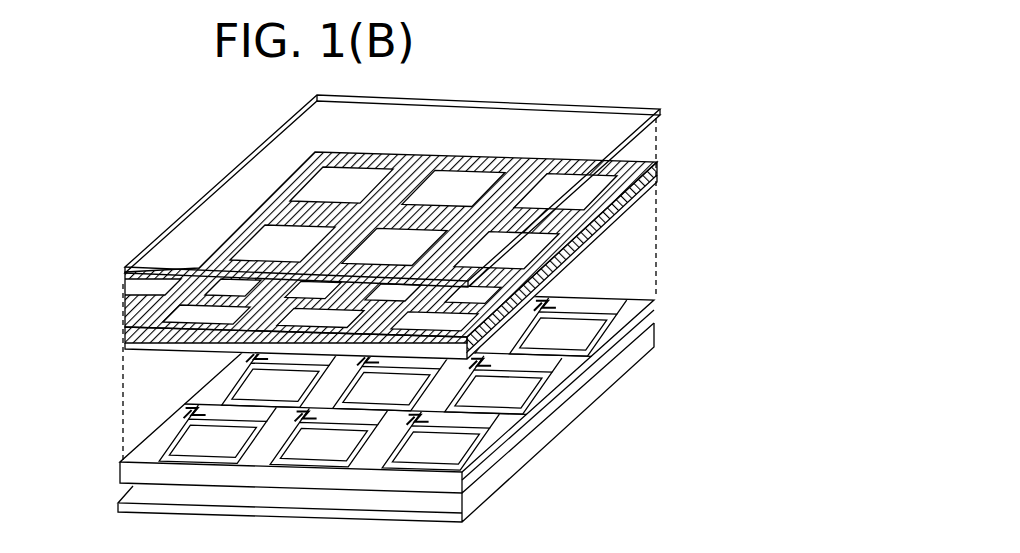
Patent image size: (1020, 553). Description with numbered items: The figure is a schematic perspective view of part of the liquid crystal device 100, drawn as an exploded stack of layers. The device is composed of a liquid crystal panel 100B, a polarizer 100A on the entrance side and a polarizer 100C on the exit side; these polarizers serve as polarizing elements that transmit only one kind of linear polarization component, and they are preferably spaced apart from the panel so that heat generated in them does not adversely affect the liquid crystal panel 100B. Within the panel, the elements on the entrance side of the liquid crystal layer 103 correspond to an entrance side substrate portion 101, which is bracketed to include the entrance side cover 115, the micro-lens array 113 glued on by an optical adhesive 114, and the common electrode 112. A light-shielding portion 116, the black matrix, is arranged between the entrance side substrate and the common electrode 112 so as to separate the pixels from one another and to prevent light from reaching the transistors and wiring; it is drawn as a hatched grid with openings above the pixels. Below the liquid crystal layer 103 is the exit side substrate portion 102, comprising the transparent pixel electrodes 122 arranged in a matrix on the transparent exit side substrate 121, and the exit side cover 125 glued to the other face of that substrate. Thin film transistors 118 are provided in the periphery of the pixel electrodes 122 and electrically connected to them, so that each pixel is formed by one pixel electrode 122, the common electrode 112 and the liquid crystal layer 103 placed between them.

The liquid crystal device 100 is at (505, 64).
The polarizer 100A is at (615, 103).
The liquid crystal panel 100B is at (489, 295).
The polarizer 100C is at (607, 393).
The entrance side substrate portion 101 is at (453, 228).
The entrance side cover 115 is at (705, 107).
The micro-lens array 113 is at (693, 99).
The optical adhesive 114 is at (705, 149).
The light-shielding portion (BM) 116 is at (660, 167).
The common electrode 112 is at (660, 176).
The liquid crystal layer 103 is at (636, 240).
The exit side substrate portion 102 is at (444, 379).
The pixel electrodes 122 is at (617, 300).
The exit side substrate 121 is at (681, 338).
The exit side cover 125 is at (416, 406).
The thin film transistors 118 is at (563, 300).